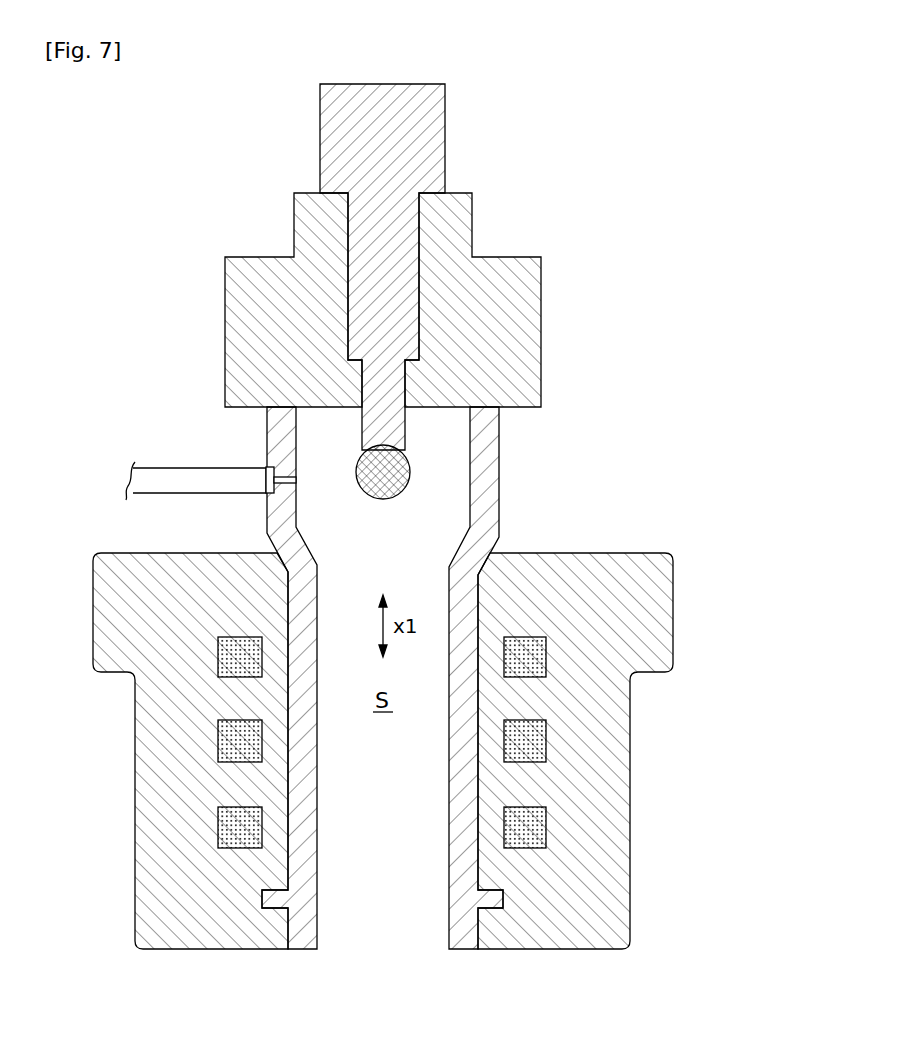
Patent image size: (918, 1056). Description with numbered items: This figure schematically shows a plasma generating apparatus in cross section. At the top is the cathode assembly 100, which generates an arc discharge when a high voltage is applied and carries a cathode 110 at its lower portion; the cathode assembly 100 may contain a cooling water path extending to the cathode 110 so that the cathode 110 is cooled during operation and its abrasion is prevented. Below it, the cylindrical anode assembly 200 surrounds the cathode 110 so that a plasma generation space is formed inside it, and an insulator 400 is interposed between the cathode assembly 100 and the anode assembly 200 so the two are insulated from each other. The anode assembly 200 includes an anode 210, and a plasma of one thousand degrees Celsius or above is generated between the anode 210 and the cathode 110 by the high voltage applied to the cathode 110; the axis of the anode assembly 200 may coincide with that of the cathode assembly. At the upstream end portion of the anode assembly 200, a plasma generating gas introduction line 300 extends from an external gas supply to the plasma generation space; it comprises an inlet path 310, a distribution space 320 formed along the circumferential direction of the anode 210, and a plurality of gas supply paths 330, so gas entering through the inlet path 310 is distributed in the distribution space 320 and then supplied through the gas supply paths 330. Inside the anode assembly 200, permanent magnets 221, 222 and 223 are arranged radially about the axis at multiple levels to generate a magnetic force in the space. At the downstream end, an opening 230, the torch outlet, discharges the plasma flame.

The cathode assembly 100 is at (433, 142).
The cathode 110 is at (385, 480).
The insulator 400 is at (541, 343).
The anode assembly 200 is at (540, 949).
The anode 210 is at (463, 938).
The opening 230 is at (368, 928).
The permanent magnet 221 is at (547, 657).
The permanent magnet 222 is at (547, 742).
The permanent magnet 223 is at (547, 827).
The plasma generating gas introduction line 300 is at (233, 483).
The inlet path 310 is at (163, 494).
The distribution space 320 is at (268, 494).
The gas supply path 330 is at (283, 473).